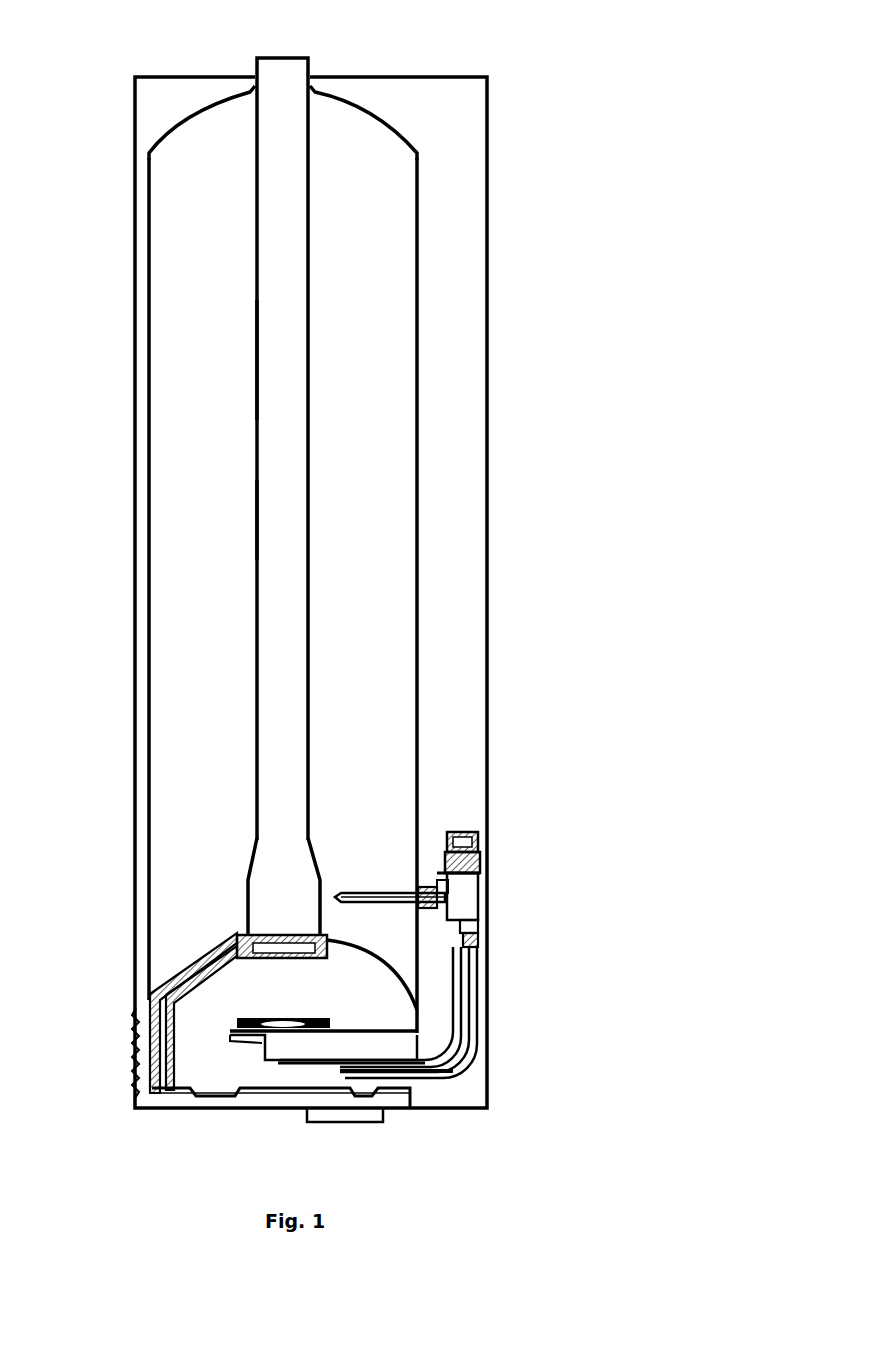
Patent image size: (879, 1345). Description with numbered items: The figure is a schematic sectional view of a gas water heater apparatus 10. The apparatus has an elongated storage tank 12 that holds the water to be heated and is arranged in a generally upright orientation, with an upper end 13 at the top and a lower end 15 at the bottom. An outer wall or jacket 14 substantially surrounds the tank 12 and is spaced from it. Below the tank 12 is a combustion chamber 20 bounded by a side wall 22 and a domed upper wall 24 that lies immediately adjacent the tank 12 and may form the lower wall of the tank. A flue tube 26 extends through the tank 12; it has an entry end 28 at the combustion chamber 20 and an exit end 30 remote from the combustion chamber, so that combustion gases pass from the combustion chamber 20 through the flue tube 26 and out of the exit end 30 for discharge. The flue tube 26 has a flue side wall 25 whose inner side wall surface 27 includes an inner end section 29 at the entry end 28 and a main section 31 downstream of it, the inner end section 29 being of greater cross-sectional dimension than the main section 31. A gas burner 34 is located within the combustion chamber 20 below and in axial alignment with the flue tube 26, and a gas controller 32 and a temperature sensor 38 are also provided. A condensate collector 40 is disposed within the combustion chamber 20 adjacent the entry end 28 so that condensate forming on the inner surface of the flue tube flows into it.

The gas water heater apparatus 10 is at (562, 214).
The storage tank 12 is at (420, 472).
The upper end 13 is at (395, 127).
The outer wall or jacket 14 is at (490, 732).
The lower end 15 is at (178, 968).
The combustion chamber 20 is at (211, 1073).
The side wall 22 is at (140, 1057).
The upper wall 24 is at (180, 950).
The flue side wall 25 is at (258, 1092).
The flue tube 26 is at (255, 772).
The inner side wall surface 27 is at (266, 536).
The entry end 28 is at (262, 935).
The inner end section 29 is at (252, 878).
The exit end 30 is at (301, 58).
The main section 31 is at (258, 373).
The gas controller 32 is at (485, 906).
The gas burner 34 is at (306, 1016).
The temperature sensor 38 is at (370, 893).
The condensate collector 40 is at (208, 988).